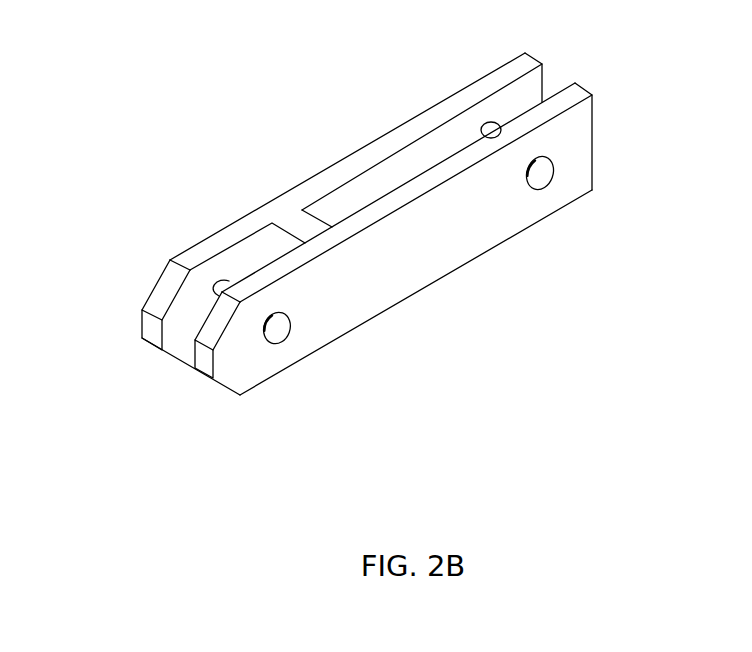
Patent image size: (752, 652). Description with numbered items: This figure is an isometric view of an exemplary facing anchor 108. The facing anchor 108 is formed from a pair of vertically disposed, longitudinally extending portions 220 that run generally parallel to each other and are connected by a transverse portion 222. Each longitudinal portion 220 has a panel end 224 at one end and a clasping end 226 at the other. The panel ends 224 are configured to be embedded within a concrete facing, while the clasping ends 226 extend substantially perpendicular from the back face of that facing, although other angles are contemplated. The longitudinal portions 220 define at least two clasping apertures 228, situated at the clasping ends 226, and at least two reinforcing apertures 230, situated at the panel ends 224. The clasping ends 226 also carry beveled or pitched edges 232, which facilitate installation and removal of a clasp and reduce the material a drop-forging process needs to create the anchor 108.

The facing anchor 108 is at (238, 162).
The longitudinally extending portion 220 is at (373, 153).
The transverse portion 222 is at (298, 226).
The panel end 224 is at (586, 92).
The clasping end 226 is at (153, 330).
The clasping aperture 228 is at (228, 283).
The reinforcing aperture 230 is at (481, 135).
The beveled edge 232 is at (165, 283).